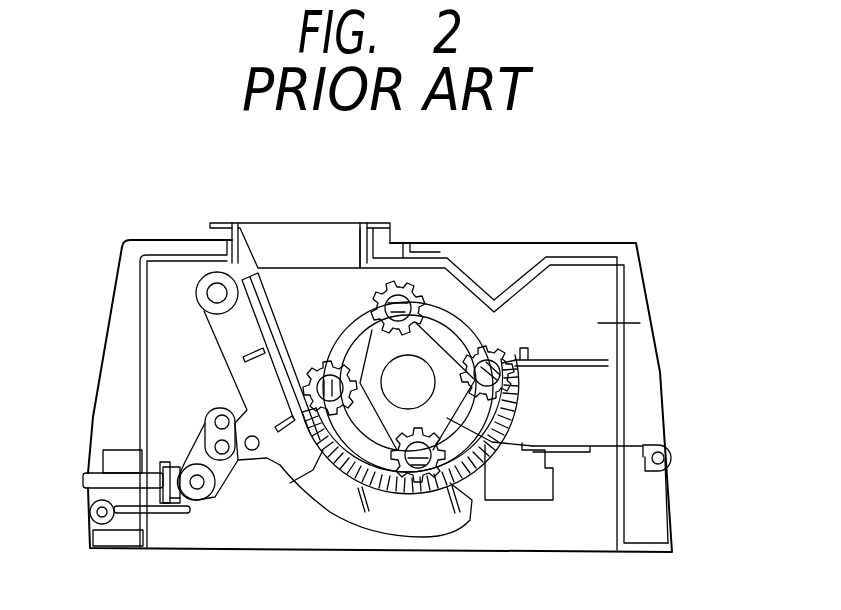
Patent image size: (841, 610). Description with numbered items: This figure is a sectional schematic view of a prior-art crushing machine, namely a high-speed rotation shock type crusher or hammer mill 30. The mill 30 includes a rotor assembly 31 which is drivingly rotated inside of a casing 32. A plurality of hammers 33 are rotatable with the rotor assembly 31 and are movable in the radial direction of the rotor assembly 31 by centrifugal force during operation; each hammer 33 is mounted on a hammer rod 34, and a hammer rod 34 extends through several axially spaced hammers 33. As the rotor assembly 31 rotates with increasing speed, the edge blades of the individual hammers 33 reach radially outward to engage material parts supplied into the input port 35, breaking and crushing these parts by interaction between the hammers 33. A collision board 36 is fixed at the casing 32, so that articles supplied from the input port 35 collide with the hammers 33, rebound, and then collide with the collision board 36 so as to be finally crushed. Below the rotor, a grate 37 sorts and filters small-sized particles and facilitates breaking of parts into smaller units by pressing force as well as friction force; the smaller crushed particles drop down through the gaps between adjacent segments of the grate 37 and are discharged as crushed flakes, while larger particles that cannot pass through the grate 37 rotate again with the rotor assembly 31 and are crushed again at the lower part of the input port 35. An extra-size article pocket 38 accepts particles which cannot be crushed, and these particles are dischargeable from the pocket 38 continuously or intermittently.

The hammer mill 30 is at (636, 245).
The rotor assembly 31 is at (457, 313).
The casing 32 is at (138, 296).
The hammers 33 is at (393, 288).
The hammer rod 34 is at (412, 288).
The input port 35 is at (302, 222).
The collision board 36 is at (280, 381).
The grate 37 is at (290, 483).
The extra-size article pocket 38 is at (640, 323).